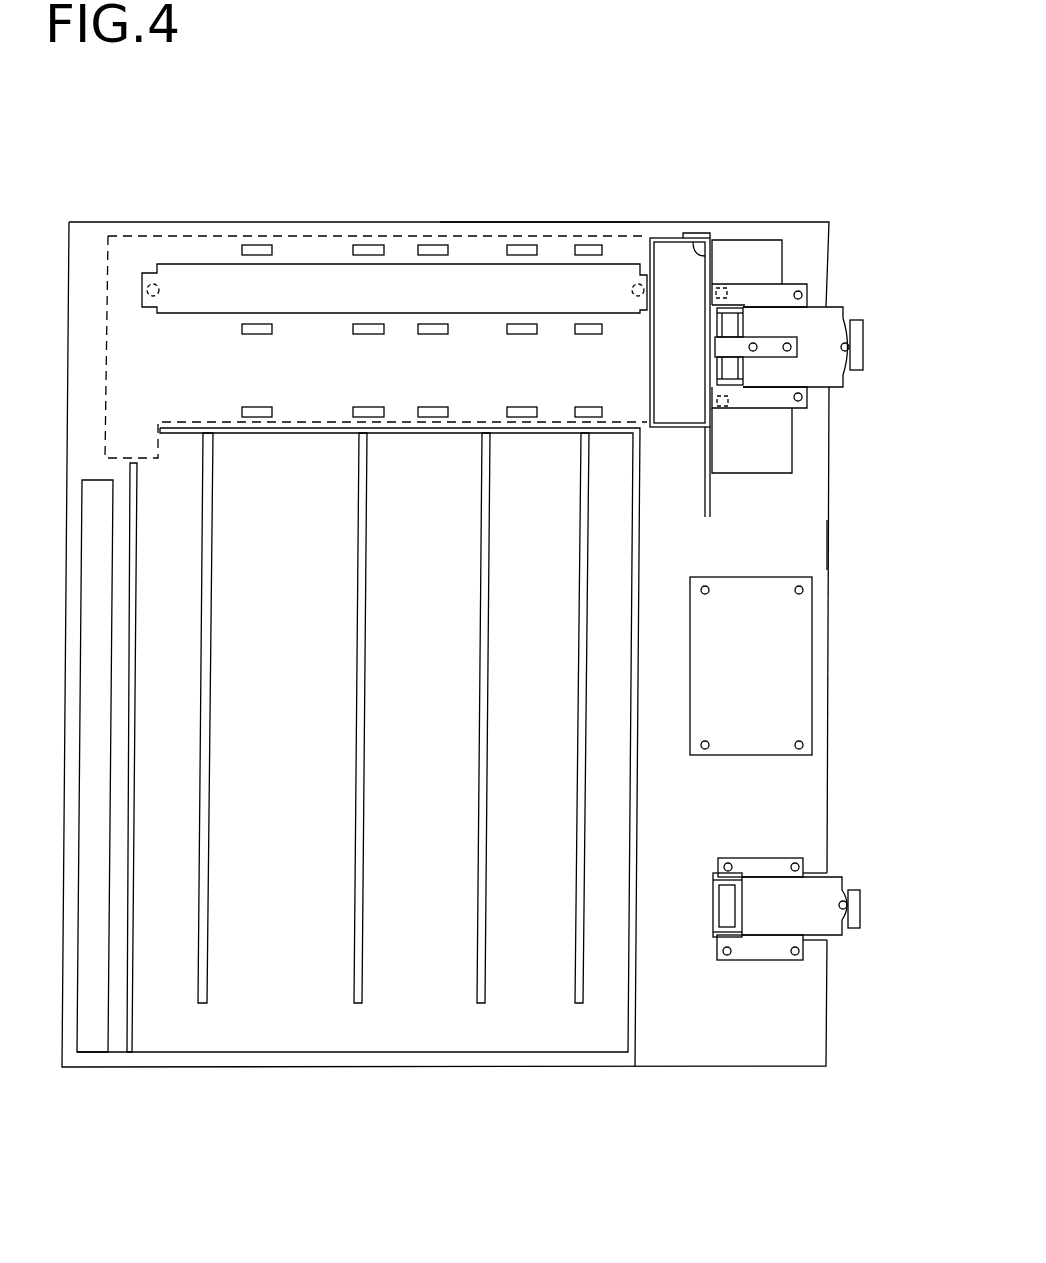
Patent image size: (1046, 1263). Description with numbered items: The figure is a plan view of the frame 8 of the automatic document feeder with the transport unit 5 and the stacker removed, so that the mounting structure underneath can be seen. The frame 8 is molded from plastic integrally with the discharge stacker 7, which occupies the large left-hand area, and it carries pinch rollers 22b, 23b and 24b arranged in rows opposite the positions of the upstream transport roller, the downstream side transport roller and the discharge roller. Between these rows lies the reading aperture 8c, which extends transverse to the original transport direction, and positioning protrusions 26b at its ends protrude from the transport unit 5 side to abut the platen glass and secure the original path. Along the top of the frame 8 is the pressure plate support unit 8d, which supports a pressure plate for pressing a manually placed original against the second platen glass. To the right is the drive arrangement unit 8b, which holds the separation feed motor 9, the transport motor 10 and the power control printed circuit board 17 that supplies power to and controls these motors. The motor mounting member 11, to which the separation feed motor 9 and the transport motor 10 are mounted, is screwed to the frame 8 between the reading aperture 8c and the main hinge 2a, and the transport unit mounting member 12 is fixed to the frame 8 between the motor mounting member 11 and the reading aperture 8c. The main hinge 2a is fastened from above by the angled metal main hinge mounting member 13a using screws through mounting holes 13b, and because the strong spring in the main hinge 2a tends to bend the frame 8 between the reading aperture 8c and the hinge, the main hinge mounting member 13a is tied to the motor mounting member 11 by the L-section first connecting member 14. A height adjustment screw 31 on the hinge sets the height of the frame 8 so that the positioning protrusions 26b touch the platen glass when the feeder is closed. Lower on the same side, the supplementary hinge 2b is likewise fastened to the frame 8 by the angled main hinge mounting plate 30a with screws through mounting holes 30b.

The main hinge 2a is at (865, 348).
The supplementary hinge 2b is at (862, 892).
The transport unit 5 is at (318, 235).
The discharge stacker 7 is at (398, 800).
The frame 8 is at (70, 930).
The drive arrangement unit 8b is at (810, 547).
The reading aperture 8c is at (463, 268).
The pressure plate support unit 8d is at (542, 228).
The separation feed motor 9 is at (785, 457).
The transport motor 10 is at (732, 245).
The motor mounting member 11 is at (690, 240).
The transport unit mounting member 12 is at (658, 238).
The main hinge mounting member 13a is at (830, 313).
The mounting holes 13b is at (730, 287).
The first connecting member 14 is at (722, 342).
The power control printed circuit board 17 is at (797, 678).
The pinch roller 22b is at (252, 247).
The pinch roller 23b is at (253, 330).
The pinch roller 24b is at (263, 407).
The positioning protrusions 26b is at (148, 268).
The main hinge mounting plate 30a is at (800, 912).
The mounting holes 30b is at (793, 863).
The height adjustment screw 31 is at (848, 352).